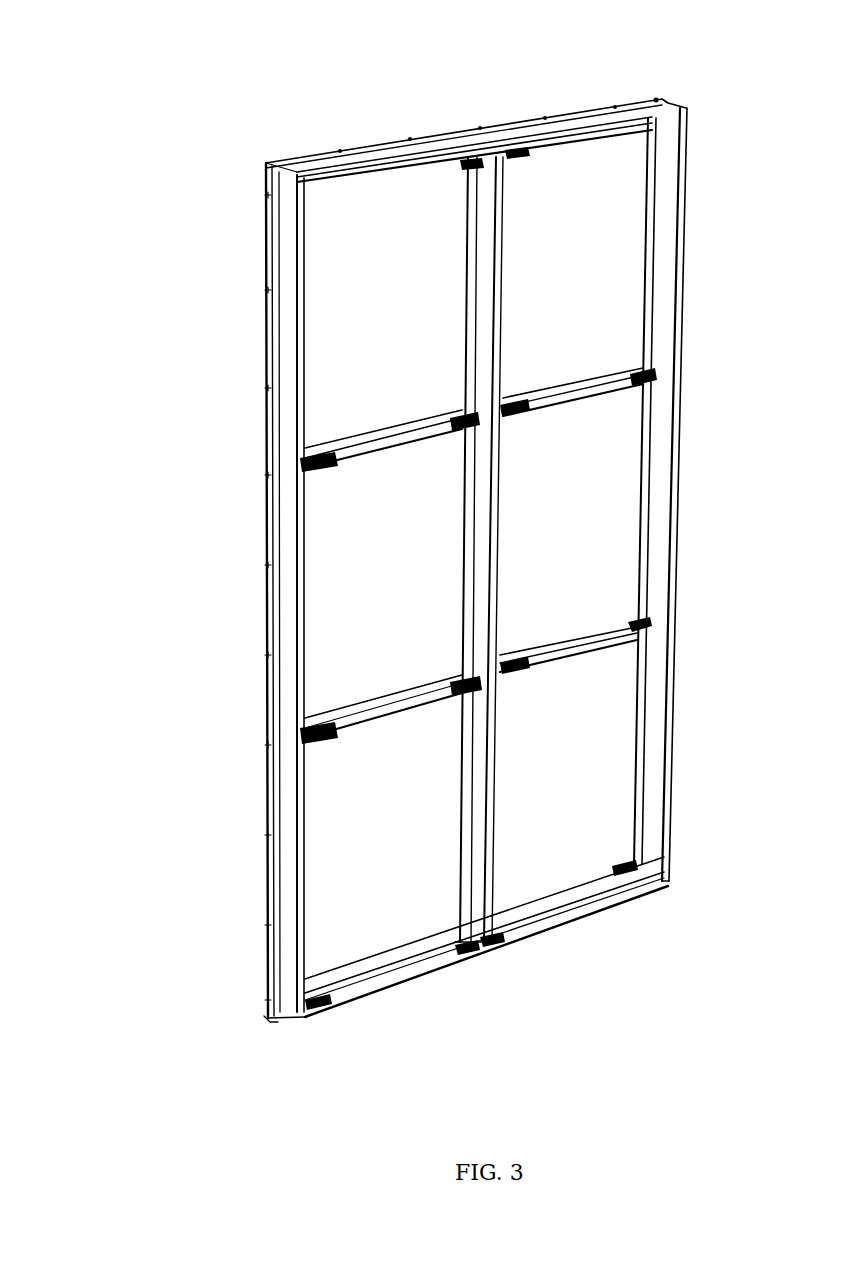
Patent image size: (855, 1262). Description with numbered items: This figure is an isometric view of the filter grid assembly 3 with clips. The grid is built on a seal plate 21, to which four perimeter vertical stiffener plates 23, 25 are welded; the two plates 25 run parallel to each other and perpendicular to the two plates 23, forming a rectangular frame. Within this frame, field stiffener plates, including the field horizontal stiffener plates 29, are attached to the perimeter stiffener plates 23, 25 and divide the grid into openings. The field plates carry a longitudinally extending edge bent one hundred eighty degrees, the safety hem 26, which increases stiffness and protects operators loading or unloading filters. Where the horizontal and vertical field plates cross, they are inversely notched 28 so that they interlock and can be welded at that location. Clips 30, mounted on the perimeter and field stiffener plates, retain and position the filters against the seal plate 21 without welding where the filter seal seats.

The filter grid assembly 3 is at (152, 62).
The seal plate 21 is at (268, 268).
The perimeter vertical stiffener plate 23 is at (290, 425).
The perimeter stiffener plate 25 is at (590, 124).
The safety hem 26 is at (637, 627).
The inverse notch 28 is at (462, 678).
The field horizontal stiffener plate 29 is at (352, 708).
The clip 30 is at (660, 375).